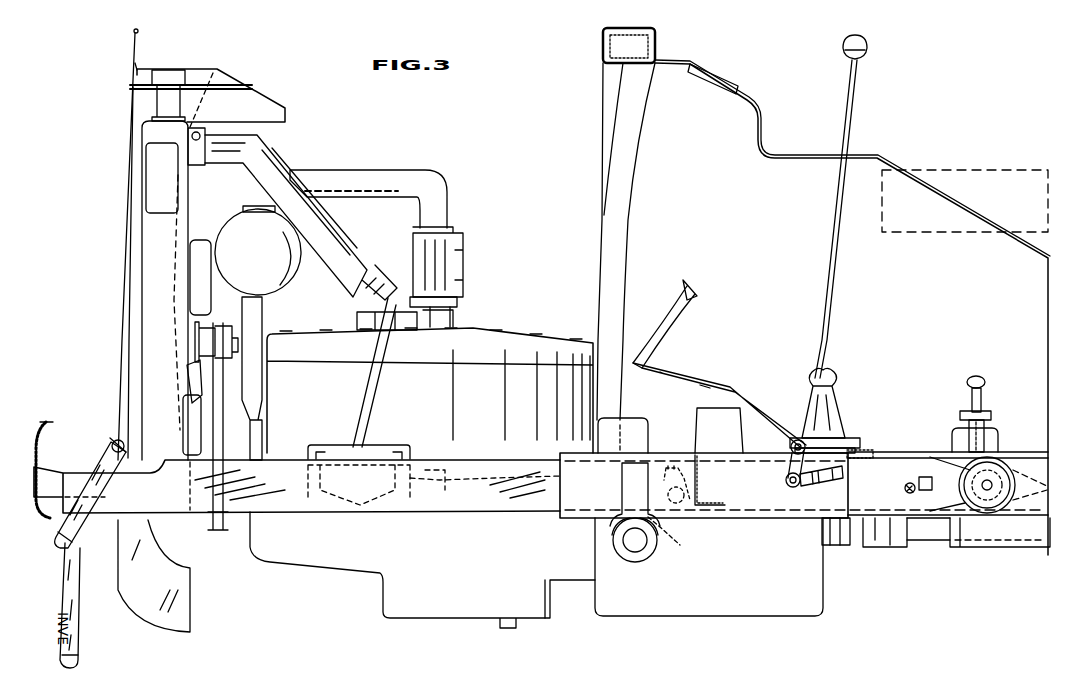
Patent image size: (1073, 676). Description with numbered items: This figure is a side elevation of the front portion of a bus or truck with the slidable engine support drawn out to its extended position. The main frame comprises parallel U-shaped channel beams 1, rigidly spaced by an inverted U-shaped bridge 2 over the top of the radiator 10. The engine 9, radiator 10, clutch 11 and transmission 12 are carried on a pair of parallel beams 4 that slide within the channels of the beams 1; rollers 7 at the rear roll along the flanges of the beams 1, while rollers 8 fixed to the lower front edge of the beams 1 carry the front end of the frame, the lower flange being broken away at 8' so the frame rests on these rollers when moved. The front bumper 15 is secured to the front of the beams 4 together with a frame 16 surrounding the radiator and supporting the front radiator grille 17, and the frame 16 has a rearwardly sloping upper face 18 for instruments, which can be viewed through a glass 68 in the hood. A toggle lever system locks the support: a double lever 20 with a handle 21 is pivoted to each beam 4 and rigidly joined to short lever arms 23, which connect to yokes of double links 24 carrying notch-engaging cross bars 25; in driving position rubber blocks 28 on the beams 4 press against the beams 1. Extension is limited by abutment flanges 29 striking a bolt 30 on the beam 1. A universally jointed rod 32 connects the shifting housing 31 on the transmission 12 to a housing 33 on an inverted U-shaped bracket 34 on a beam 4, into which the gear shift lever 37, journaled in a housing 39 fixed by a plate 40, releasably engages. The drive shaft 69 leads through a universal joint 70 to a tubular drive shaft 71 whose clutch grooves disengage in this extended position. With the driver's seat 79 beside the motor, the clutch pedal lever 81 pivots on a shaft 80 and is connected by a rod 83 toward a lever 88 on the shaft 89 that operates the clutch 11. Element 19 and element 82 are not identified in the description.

The U-shaped channel beams 1 is at (912, 540).
The inverted U-shaped bridge 2 is at (636, 28).
The engine supporting beams 4 is at (196, 512).
The rollers 7 is at (1003, 458).
The rollers 8 is at (641, 546).
The broken-away flange portion 8' is at (638, 532).
The engine 9 is at (492, 336).
The radiator 10 is at (181, 227).
The clutch 11 is at (640, 420).
The transmission 12 is at (792, 611).
The front bumper 15 is at (44, 421).
The frame 16 is at (172, 334).
The front radiator grille 17 is at (120, 273).
The rearwardly sloping upper face 18 is at (251, 91).
The control lever 19 is at (985, 394).
The double lever 20 is at (64, 582).
The handle 21 is at (78, 662).
The short lever arms 23 is at (60, 538).
The double links 24 is at (98, 460).
The notch engaging cross bars 25 is at (116, 440).
The rubber blocks 28 is at (113, 444).
The abutment flanges 29 is at (928, 476).
The bolt 30 is at (911, 482).
The housing 31 is at (697, 414).
The universally jointed rod 32 is at (497, 476).
The housing 33 is at (322, 505).
The inverted U-shaped bracket 34 is at (406, 450).
The gear shift lever 37 is at (828, 264).
The housing 39 is at (842, 406).
The plate 40 is at (865, 438).
The glass 68 is at (704, 72).
The drive shaft 69 is at (832, 548).
The universal joint 70 is at (885, 549).
The tubular drive shaft 71 is at (1012, 548).
The driver's seat 79 is at (985, 178).
The shaft 80 is at (797, 440).
The clutch pedal lever 81 is at (688, 380).
The link 82 is at (784, 477).
The rod 83 is at (826, 484).
The lever 88 is at (692, 482).
The shaft 89 is at (682, 510).